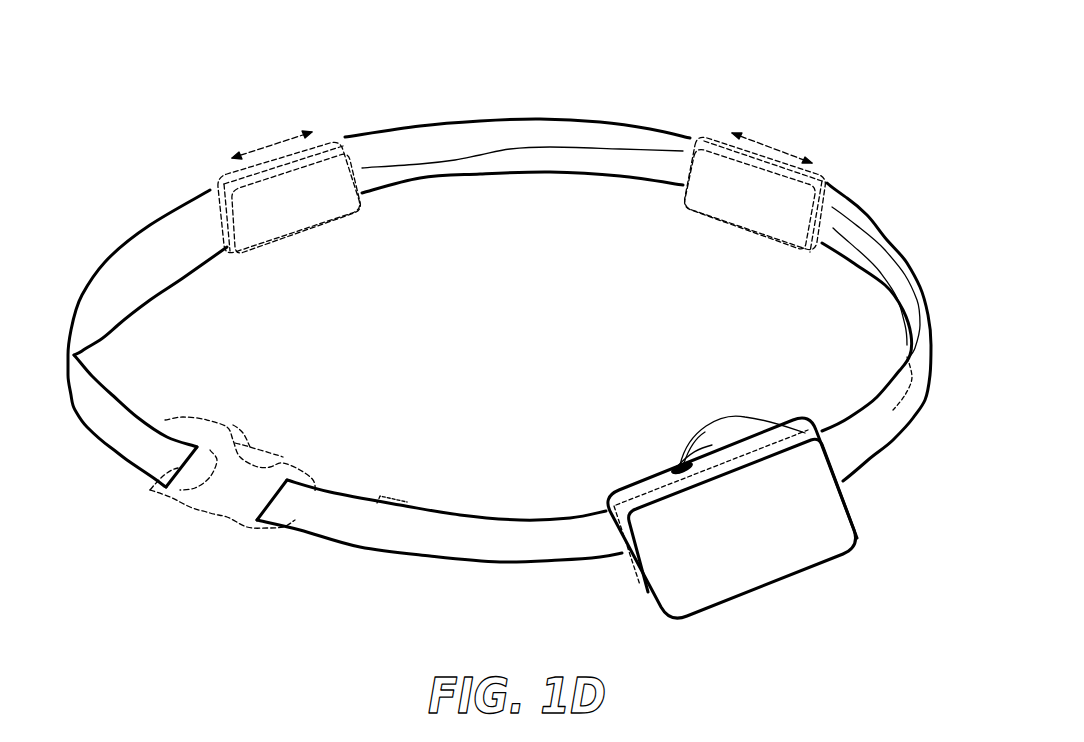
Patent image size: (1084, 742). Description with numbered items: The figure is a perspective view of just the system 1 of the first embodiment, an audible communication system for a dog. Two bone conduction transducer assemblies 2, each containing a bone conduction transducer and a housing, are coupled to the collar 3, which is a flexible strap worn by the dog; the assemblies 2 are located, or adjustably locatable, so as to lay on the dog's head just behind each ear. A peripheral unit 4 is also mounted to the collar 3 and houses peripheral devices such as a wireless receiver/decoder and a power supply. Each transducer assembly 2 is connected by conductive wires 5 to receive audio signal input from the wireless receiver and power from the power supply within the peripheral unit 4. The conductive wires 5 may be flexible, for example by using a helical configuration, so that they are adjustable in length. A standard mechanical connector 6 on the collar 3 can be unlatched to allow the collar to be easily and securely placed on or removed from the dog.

The system 1 is at (499, 328).
The bone conduction transducer assembly 2 is at (217, 180).
The collar 3 is at (533, 120).
The peripheral unit 4 is at (820, 567).
The conductive wires 5 is at (707, 417).
The mechanical connector 6 is at (207, 515).